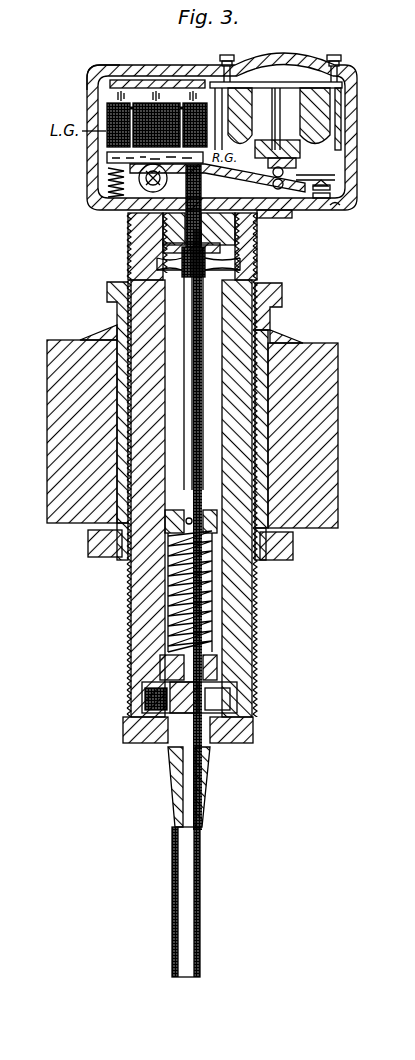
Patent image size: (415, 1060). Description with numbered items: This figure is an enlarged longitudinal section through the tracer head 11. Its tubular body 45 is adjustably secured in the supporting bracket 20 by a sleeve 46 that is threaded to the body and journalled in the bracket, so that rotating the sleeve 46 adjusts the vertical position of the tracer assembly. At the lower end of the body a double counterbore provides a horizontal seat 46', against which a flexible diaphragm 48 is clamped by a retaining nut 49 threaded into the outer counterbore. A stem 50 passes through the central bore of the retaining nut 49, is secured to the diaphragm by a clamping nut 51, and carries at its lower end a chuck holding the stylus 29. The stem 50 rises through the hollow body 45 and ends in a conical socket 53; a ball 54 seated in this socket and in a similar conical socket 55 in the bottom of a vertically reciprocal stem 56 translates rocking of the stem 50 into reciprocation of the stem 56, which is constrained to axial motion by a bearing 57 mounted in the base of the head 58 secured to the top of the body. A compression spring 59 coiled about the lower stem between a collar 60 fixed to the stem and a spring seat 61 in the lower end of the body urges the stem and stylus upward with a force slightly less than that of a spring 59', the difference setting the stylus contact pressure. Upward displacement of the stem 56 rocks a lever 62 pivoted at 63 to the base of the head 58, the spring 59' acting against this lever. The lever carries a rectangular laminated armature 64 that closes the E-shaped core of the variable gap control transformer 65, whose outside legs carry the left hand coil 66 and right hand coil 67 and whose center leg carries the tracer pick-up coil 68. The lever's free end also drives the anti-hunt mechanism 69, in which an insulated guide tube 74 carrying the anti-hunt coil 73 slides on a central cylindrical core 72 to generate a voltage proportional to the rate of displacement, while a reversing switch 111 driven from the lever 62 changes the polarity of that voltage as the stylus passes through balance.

The instrument assembly 11 is at (80, 296).
The supporting bracket 20 is at (343, 456).
The stylus 29 is at (192, 920).
The tubular body 45 is at (248, 633).
The sleeve 46 is at (213, 429).
The horizontal seat 46' is at (214, 727).
The flexible diaphragm 48 is at (236, 706).
The retaining nut 49 is at (212, 757).
The stem 50 is at (212, 380).
The clamping nut 51 is at (156, 698).
The conical socket 53 is at (240, 265).
The ball 54 is at (160, 259).
The conical socket 55 is at (238, 251).
The vertically reciprocal stem 56 is at (150, 216).
The bearing 57 is at (160, 236).
The head 58 is at (357, 192).
The compression spring 59 is at (153, 581).
The spring 59' is at (84, 182).
The collar 60 is at (126, 575).
The spring seat 61 is at (162, 663).
The lever 62 is at (262, 205).
The pivot 63 is at (100, 206).
The rectangular laminated armature 64 is at (108, 157).
The variable gap control transformer 65 is at (100, 75).
The left hand coil 66 is at (110, 116).
The right hand coil 67 is at (217, 84).
The center coil 68 is at (160, 92).
The anti-hunt mechanism 69 is at (313, 74).
The central cylindrical core 72 is at (275, 100).
The anti-hunt coil 73 is at (340, 157).
The insulated guide tube 74 is at (312, 122).
The reversing switch 111 is at (333, 212).